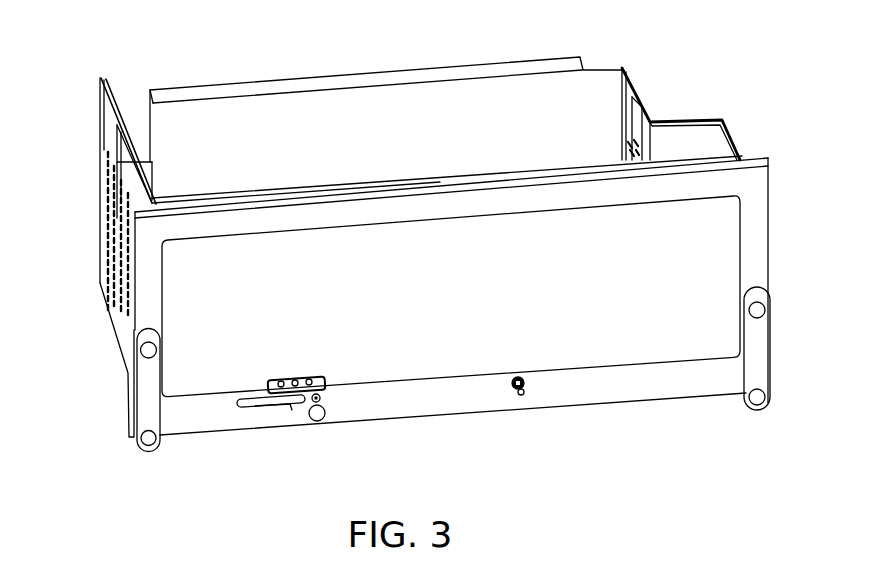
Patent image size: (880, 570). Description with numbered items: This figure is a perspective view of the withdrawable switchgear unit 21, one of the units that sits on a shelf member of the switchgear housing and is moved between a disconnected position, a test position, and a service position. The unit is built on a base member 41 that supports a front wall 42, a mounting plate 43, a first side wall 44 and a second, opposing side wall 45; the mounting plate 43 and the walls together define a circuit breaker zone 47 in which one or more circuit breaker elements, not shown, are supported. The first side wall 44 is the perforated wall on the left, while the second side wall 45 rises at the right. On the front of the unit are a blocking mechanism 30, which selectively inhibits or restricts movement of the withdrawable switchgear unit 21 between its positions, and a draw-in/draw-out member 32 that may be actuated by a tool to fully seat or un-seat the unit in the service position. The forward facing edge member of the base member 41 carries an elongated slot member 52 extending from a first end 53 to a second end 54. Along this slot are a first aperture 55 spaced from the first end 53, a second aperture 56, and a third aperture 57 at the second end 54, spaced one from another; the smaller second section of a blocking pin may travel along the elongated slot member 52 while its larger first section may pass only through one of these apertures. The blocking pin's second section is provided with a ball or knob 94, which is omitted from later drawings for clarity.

The withdrawable switchgear unit 21 is at (80, 341).
The blocking mechanism 30 is at (302, 415).
The draw-in/draw-out member 32 is at (522, 394).
The base member 41 is at (92, 276).
The front wall 42 is at (623, 318).
The mounting plate 43 is at (266, 133).
The first side wall 44 is at (95, 212).
The second side wall 45 is at (681, 137).
The circuit breaker zone 47 is at (381, 143).
The elongated slot member 52 is at (277, 432).
The first end 53 is at (236, 399).
The second end 54 is at (323, 398).
The first aperture 55 is at (265, 380).
The second aperture 56 is at (293, 408).
The third aperture 57 is at (302, 378).
The ball or knob 94 is at (330, 420).